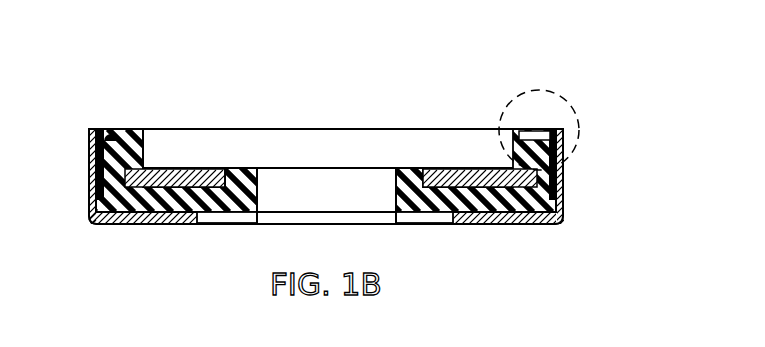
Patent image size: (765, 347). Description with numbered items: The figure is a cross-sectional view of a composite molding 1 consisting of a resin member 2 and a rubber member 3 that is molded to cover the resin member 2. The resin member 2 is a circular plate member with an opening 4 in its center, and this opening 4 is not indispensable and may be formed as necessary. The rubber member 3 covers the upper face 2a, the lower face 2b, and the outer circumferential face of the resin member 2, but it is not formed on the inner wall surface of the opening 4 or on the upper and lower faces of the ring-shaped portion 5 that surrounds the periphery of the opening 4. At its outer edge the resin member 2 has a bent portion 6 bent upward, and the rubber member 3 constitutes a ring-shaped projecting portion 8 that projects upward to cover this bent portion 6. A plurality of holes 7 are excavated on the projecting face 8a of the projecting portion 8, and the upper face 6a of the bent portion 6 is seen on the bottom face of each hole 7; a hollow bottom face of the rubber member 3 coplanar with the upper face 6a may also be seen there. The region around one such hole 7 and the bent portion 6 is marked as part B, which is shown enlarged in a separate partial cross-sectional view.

The composite molding 1 is at (492, 99).
The resin member 2 is at (405, 175).
The upper face 2a is at (470, 175).
The lower face 2b is at (428, 216).
The rubber member 3 is at (562, 204).
The opening 4 is at (304, 182).
The ring-shaped portion 5 is at (245, 172).
The bent portion 6 is at (100, 182).
The upper face of bent portion 6a is at (110, 133).
The hole 7 is at (537, 133).
The projecting portion 8 is at (143, 140).
The projecting face 8a is at (135, 133).
The part B is at (570, 108).